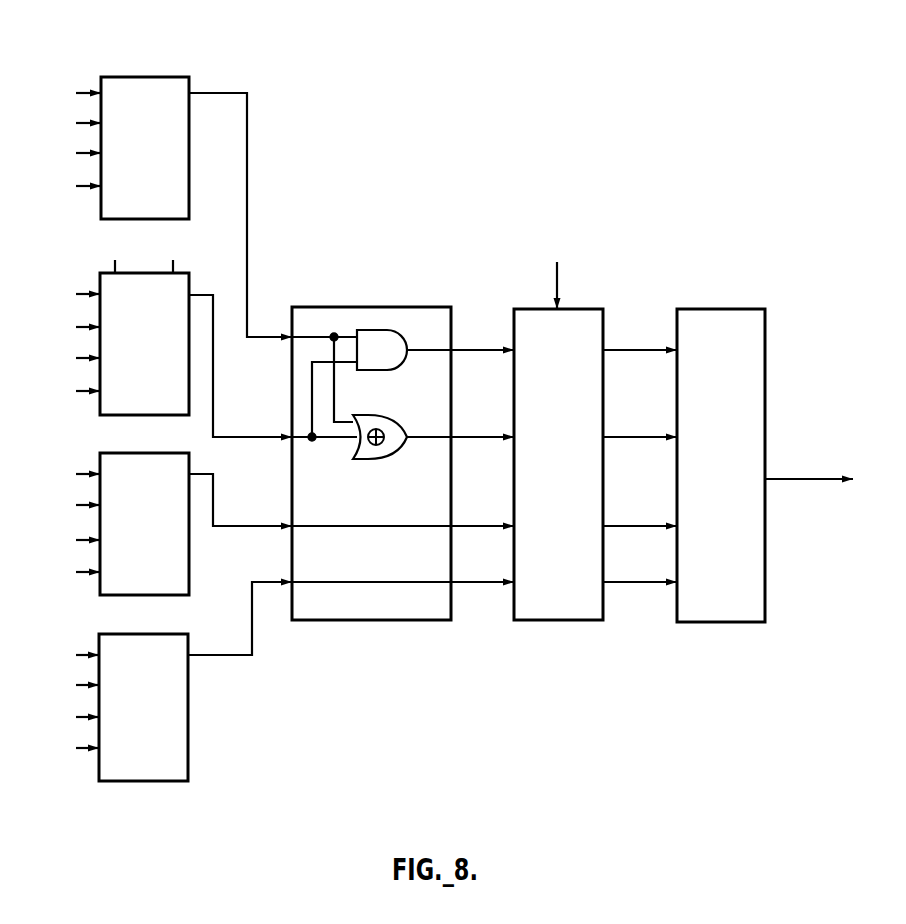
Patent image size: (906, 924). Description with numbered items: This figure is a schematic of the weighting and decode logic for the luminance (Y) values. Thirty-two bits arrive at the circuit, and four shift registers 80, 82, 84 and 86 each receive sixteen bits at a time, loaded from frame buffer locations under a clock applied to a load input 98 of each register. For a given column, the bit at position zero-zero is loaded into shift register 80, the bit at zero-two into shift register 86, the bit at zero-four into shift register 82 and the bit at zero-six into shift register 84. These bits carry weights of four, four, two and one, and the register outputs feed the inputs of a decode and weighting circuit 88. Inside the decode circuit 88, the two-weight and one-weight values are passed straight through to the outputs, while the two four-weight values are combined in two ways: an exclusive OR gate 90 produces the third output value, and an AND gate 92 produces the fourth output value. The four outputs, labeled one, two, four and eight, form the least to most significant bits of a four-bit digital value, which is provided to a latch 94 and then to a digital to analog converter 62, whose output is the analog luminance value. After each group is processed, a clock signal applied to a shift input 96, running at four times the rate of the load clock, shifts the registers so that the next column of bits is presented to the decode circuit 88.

The shift register 80 is at (189, 129).
The shift register 82 is at (189, 289).
The shift register 84 is at (189, 563).
The shift register 86 is at (188, 720).
The decode and weighting circuit 88 is at (403, 447).
The exclusive OR gate 90 is at (380, 417).
The AND gate 92 is at (395, 330).
The latch 94 is at (585, 309).
The digital to analog converter 62 is at (735, 309).
The shift input 96 is at (173, 77).
The load input 98 is at (117, 77).